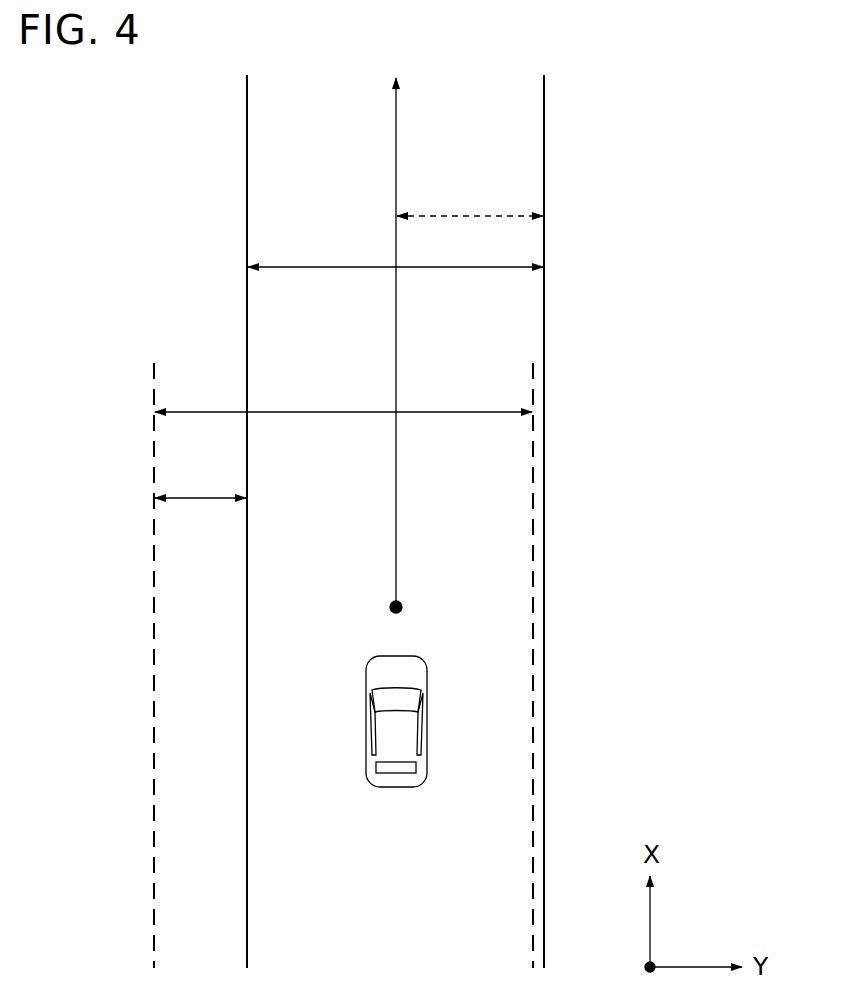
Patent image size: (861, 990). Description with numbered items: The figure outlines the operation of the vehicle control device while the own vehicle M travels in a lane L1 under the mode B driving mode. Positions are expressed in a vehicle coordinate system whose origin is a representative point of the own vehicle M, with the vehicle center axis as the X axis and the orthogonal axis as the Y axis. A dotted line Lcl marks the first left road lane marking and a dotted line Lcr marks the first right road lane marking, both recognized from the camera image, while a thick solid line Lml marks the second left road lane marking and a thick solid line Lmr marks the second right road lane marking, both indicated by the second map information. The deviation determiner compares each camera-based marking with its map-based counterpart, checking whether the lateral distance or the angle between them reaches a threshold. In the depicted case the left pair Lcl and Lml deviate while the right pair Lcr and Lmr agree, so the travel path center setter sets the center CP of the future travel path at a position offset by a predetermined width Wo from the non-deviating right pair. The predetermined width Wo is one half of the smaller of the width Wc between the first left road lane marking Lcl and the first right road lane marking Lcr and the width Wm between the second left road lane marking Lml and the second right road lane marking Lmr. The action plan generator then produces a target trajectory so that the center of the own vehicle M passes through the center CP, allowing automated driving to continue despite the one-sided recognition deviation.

The second left road lane marking Lml is at (247, 110).
The second right road lane marking Lmr is at (546, 110).
The first left road lane marking Lcl is at (152, 390).
The first right road lane marking Lcr is at (535, 392).
The predetermined width Wo is at (470, 196).
The width between second left and second right road lane markings Wm is at (395, 247).
The width between first left and first right road lane markings Wc is at (343, 393).
The center of travel path CP is at (403, 607).
The own vehicle M is at (428, 718).
The lane L1 is at (412, 968).